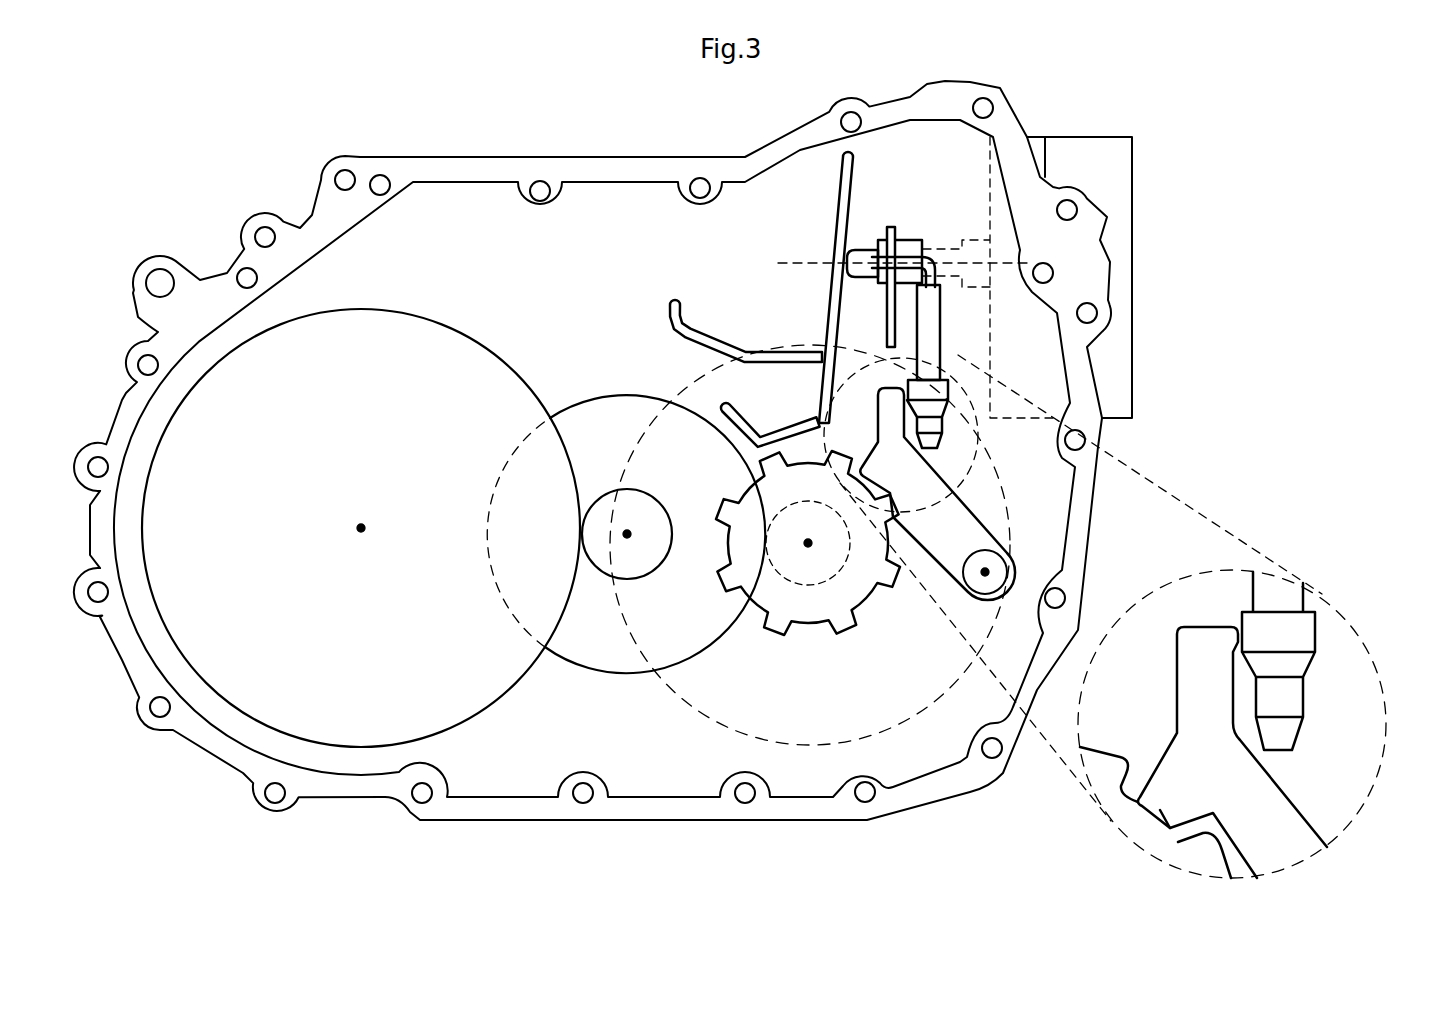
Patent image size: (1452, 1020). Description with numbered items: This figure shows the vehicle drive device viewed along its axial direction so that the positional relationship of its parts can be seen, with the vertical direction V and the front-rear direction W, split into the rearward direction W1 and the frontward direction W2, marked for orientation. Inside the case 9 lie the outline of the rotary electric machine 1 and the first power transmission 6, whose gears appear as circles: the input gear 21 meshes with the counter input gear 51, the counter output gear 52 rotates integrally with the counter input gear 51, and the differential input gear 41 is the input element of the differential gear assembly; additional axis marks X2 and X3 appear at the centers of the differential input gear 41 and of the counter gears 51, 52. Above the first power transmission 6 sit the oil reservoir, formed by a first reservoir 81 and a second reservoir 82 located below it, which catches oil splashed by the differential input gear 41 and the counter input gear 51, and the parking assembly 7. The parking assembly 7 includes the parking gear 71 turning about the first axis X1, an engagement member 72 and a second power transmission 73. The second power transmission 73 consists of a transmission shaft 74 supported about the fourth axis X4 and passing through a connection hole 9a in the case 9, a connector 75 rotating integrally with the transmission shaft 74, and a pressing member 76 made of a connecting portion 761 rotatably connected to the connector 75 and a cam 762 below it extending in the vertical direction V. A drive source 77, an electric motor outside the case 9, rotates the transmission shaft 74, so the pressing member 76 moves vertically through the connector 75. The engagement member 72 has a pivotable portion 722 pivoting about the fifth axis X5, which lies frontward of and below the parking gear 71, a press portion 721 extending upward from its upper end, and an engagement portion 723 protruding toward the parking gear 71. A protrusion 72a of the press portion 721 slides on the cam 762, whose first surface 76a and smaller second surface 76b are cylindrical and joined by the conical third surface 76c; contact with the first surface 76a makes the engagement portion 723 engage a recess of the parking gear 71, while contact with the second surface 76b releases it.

The rotary electric machine 1 is at (818, 748).
The first power transmission 6 is at (607, 300).
The parking assembly 7 is at (1052, 88).
The case 9 is at (623, 157).
The connection hole 9a is at (942, 255).
The input gear 21 is at (847, 570).
The differential input gear 41 is at (388, 306).
The counter input gear 51 is at (580, 407).
The counter output gear 52 is at (603, 577).
The parking gear 71 is at (814, 630).
The engagement member 72 is at (925, 515).
The protrusion 72a is at (1210, 608).
The press portion 721 is at (1230, 640).
The pivotable portion 722 is at (1283, 850).
The engagement portion 723 is at (1160, 810).
The second power transmission 73 is at (884, 156).
The transmission shaft 74 is at (858, 250).
The connector 75 is at (861, 255).
The pressing member 76 is at (946, 329).
The connecting portion 761 is at (907, 250).
The cam 762 is at (944, 388).
The first surface 76a is at (1316, 630).
The second surface 76b is at (1305, 712).
The third surface 76c is at (1305, 672).
The drive source 77 is at (1102, 137).
The first reservoir 81 is at (770, 323).
The second reservoir 82 is at (747, 392).
The first axis X1 is at (808, 543).
The second axis X2 is at (361, 524).
The third axis X3 is at (627, 534).
The fourth axis X4 is at (887, 266).
The fifth axis X5 is at (990, 572).
The front-rear direction W is at (435, 75).
The rearward direction W1 is at (214, 77).
The frontward direction W2 is at (459, 77).
The vertical direction V is at (1360, 180).